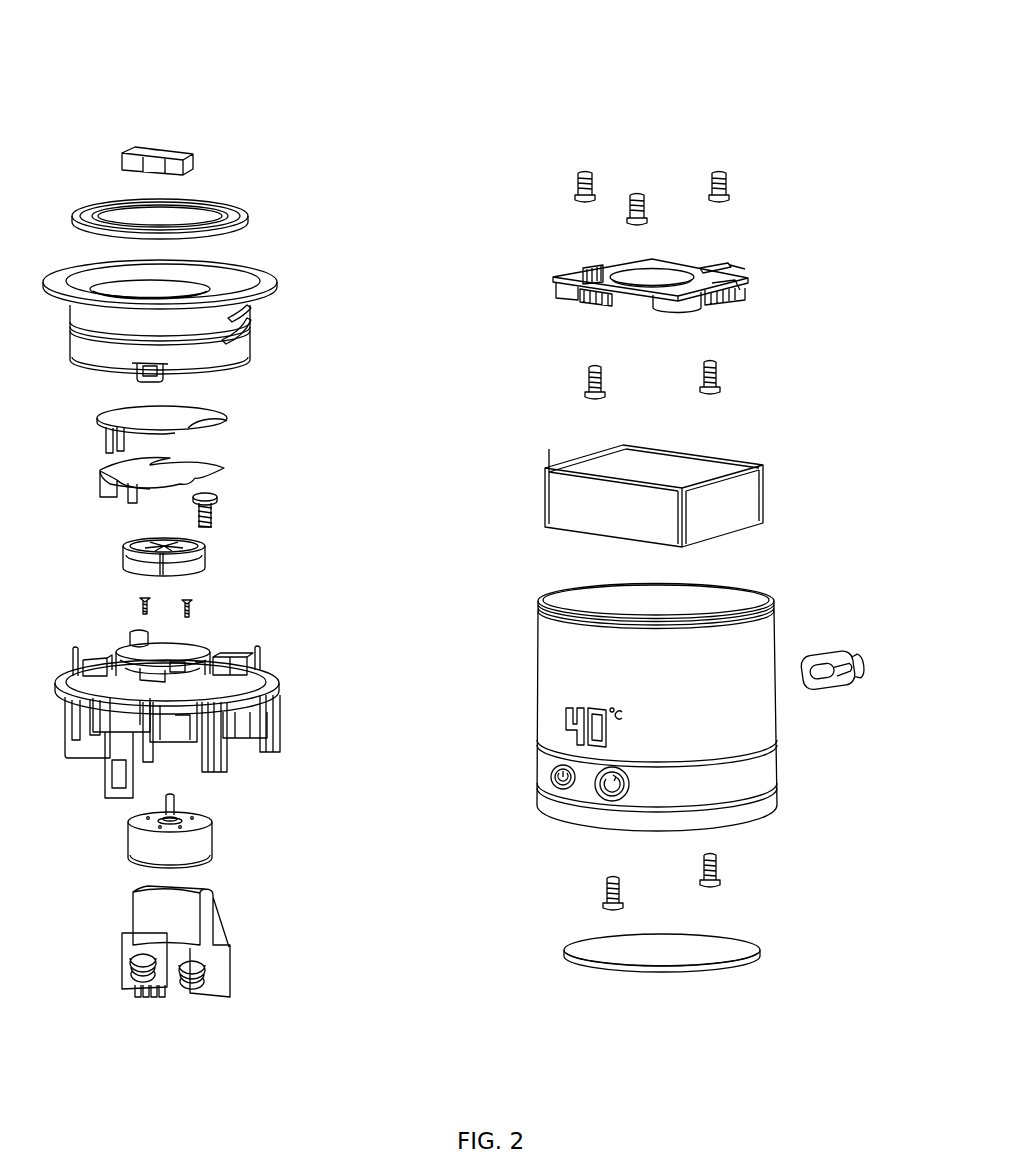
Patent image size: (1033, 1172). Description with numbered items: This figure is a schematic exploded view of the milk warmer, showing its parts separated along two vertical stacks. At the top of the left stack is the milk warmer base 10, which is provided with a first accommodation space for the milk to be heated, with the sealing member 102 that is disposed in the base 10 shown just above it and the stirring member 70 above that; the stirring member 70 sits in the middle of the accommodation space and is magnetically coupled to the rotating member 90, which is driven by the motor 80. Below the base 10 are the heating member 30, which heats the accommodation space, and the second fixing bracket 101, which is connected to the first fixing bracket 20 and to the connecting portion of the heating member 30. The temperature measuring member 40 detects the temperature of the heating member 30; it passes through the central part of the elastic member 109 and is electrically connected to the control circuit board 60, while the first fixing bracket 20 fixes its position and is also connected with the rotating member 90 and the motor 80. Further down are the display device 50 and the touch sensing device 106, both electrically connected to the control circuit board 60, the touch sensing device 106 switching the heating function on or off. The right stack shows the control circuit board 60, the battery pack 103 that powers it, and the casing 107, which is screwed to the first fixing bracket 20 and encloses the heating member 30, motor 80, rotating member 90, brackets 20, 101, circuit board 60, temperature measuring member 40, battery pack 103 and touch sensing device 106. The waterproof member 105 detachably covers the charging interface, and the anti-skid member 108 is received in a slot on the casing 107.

The milk warmer base 10 is at (270, 285).
The first fixing bracket 20 is at (270, 718).
The heating member 30 is at (226, 413).
The temperature measuring member 40 is at (214, 495).
The display device 50 is at (135, 904).
The control circuit board 60 is at (745, 280).
The stirring member 70 is at (195, 161).
The motor 80 is at (205, 845).
The rotating member 90 is at (205, 573).
The second fixing bracket 101 is at (225, 472).
The sealing member 102 is at (247, 215).
The battery pack 103 is at (757, 495).
The waterproof member 105 is at (858, 671).
The touch sensing device 106 is at (130, 975).
The casing 107 is at (775, 765).
The anti-skid member 108 is at (758, 955).
The elastic member 109 is at (214, 525).